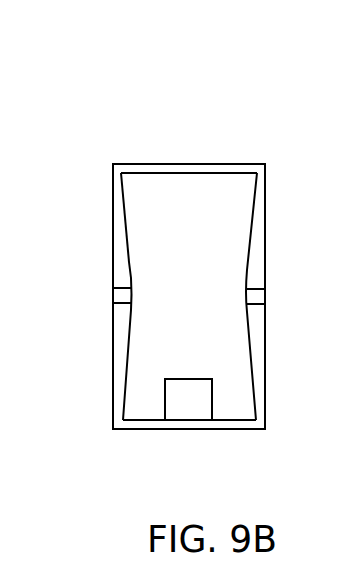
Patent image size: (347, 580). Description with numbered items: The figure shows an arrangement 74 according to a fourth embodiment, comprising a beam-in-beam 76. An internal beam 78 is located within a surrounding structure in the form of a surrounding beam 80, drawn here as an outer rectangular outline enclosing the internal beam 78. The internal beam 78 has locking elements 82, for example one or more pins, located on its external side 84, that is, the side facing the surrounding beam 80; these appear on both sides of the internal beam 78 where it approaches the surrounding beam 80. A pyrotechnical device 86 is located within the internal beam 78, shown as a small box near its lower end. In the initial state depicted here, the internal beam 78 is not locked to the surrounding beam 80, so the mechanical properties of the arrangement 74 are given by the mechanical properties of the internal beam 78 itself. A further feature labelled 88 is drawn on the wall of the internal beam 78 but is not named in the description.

The arrangement 74 is at (179, 236).
The beam-in-beam 76 is at (179, 236).
The internal beam 78 is at (197, 171).
The surrounding beam 80 is at (111, 183).
The locking elements 82 is at (123, 297).
The external side 84 is at (128, 276).
The pyrotechnical device 86 is at (204, 411).
The inner curved wall 88 is at (147, 296).